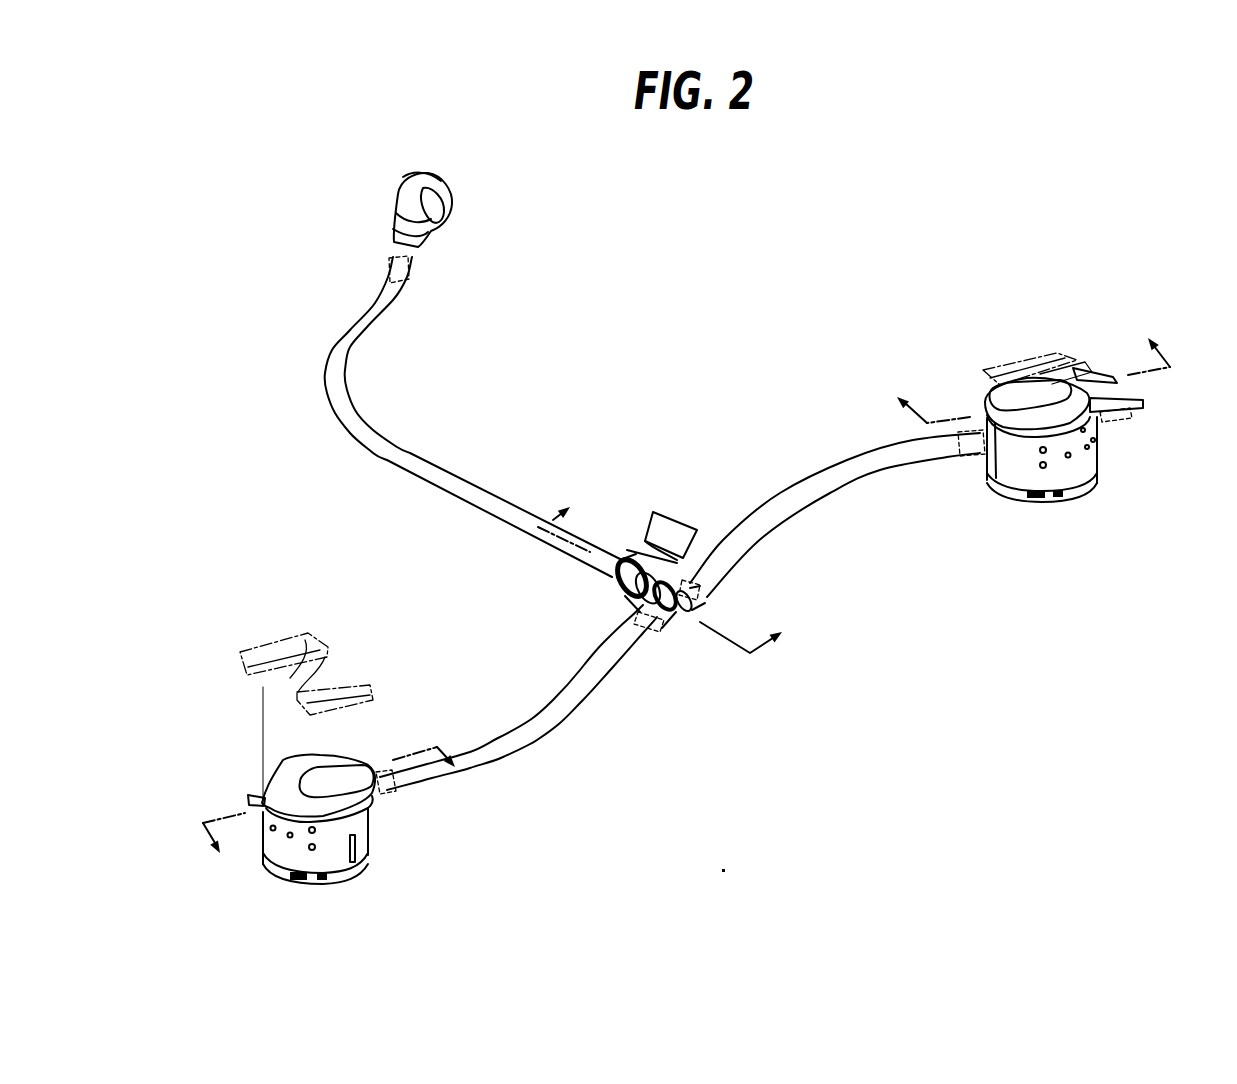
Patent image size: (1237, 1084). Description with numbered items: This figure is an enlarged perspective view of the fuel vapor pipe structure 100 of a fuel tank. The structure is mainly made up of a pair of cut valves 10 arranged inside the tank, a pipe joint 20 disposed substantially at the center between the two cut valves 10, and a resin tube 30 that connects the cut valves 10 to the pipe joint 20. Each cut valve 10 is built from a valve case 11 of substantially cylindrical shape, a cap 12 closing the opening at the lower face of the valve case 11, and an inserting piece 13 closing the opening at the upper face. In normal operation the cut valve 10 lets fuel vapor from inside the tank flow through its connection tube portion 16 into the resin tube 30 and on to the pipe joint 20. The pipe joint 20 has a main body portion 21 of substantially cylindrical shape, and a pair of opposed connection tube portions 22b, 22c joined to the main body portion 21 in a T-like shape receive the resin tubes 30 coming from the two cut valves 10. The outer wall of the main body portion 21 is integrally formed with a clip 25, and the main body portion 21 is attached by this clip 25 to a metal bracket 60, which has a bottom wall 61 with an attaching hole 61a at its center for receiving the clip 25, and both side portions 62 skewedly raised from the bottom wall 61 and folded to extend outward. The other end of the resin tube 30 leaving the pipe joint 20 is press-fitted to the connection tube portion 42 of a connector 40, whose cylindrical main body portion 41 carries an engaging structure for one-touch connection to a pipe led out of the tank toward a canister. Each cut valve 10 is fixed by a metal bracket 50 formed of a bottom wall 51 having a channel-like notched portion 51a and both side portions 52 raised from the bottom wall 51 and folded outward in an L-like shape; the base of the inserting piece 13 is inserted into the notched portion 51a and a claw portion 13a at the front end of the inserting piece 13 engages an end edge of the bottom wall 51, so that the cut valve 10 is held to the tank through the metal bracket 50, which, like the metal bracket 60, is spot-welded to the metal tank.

The fuel vapor pipe structure 100 is at (644, 383).
The cut valve 10 is at (703, 627).
The valve case 11 is at (278, 842).
The cap 12 is at (338, 880).
The inserting piece 13 is at (278, 770).
The claw portion 13a is at (285, 783).
The connection tube portion 16 is at (392, 778).
The pipe joint 20 is at (677, 579).
The main body portion 21 is at (690, 626).
The connection tube portion 22b is at (653, 620).
The connection tube portion 22c is at (692, 593).
The clip 25 is at (648, 558).
The resin tube 30 is at (405, 461).
The connector 40 is at (444, 244).
The main body portion 41 is at (404, 215).
The connection tube portion 42 is at (409, 280).
The metal bracket 50 is at (682, 528).
The bottom wall 51 is at (252, 683).
The notched portion 51a is at (338, 672).
The side portions 52 is at (298, 632).
The metal bracket 60 is at (668, 522).
The bottom wall 61 is at (620, 553).
The attaching hole 61a is at (652, 569).
The side portions 62 is at (662, 538).